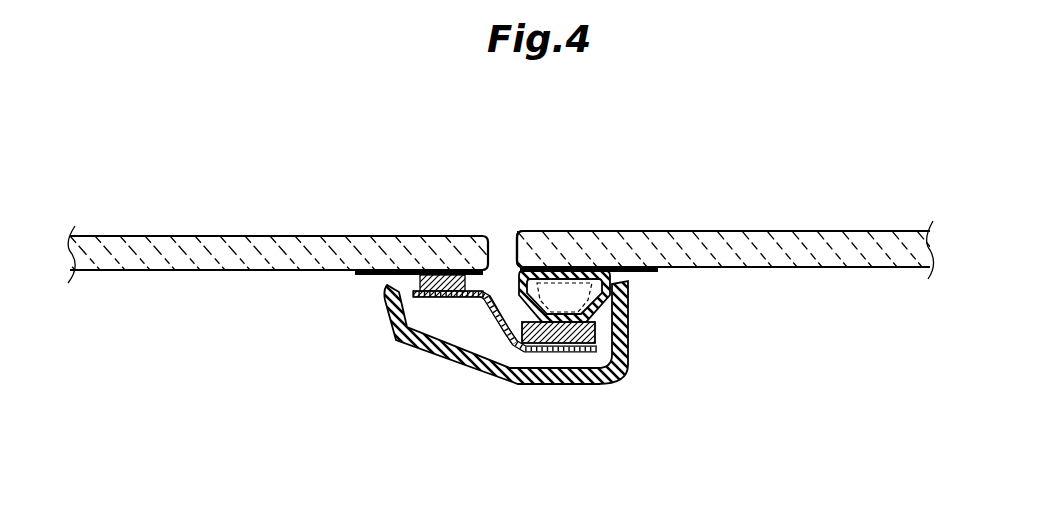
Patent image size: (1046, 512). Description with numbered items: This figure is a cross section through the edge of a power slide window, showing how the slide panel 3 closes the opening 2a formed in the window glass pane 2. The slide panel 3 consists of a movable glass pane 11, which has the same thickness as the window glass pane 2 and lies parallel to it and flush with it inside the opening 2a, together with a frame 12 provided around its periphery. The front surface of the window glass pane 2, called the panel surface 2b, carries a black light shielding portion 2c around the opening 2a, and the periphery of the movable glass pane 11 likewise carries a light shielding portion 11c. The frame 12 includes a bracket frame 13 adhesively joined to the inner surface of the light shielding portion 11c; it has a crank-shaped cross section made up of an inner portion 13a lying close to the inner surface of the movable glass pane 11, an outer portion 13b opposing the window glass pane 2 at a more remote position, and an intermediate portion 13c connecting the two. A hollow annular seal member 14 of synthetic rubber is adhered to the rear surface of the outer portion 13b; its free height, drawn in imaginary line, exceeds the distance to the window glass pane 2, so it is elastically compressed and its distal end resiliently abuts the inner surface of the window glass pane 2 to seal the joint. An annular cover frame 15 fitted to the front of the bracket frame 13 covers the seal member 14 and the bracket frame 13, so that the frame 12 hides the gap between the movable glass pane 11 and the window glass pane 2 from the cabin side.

The window glass pane 2 is at (721, 250).
The opening 2a is at (509, 240).
The panel surface 2b is at (783, 268).
The light shielding portion 2c is at (645, 272).
The slide panel 3 is at (278, 254).
The movable glass pane 11 is at (332, 243).
The light shielding portion 11c is at (358, 277).
The frame 12 is at (531, 395).
The bracket frame 13 is at (476, 318).
The inner portion 13a is at (433, 297).
The outer portion 13b is at (562, 357).
The intermediate portion 13c is at (497, 330).
The seal member 14 is at (606, 272).
The cover frame 15 is at (588, 384).